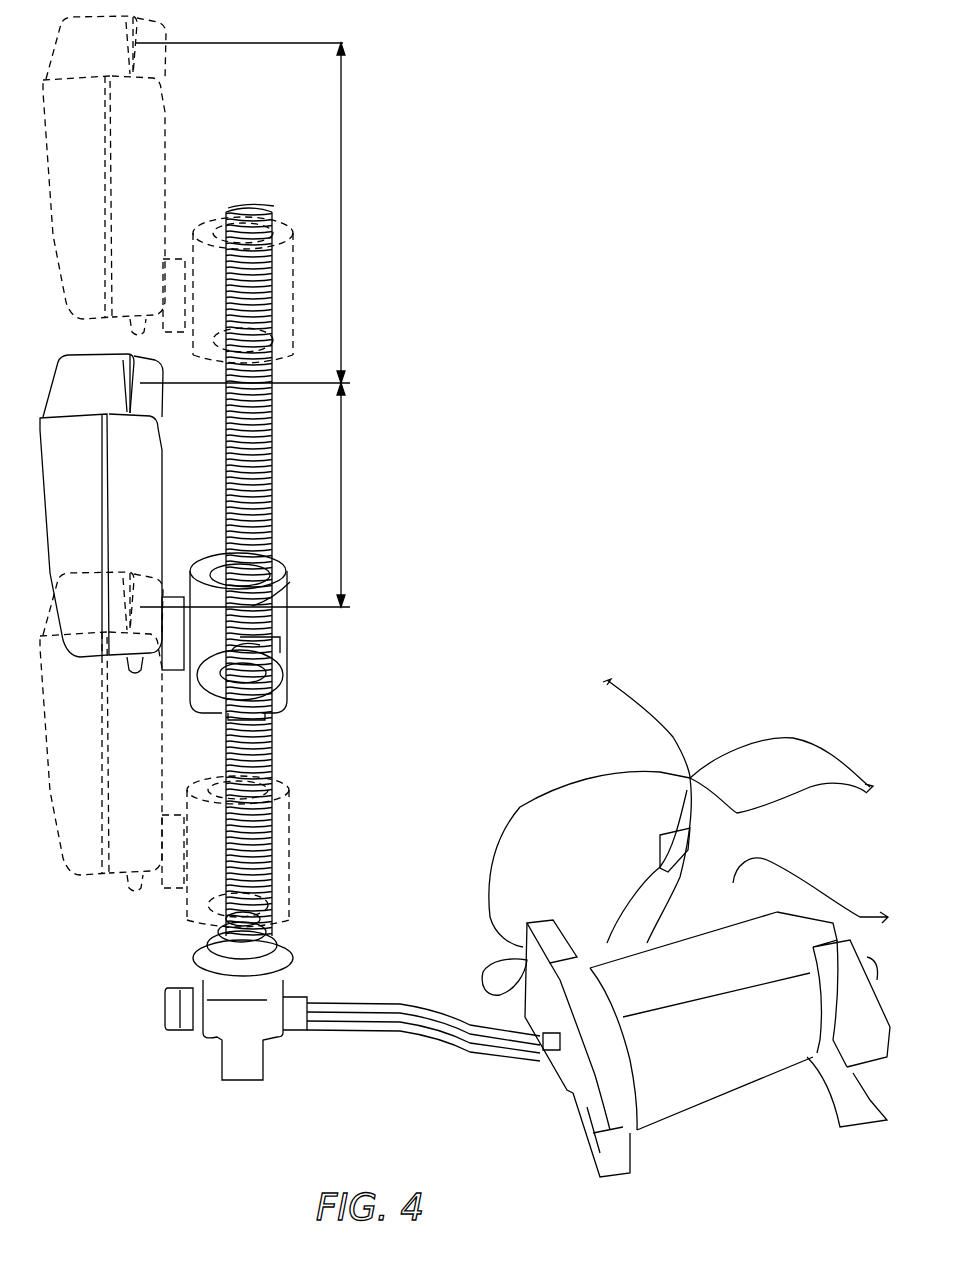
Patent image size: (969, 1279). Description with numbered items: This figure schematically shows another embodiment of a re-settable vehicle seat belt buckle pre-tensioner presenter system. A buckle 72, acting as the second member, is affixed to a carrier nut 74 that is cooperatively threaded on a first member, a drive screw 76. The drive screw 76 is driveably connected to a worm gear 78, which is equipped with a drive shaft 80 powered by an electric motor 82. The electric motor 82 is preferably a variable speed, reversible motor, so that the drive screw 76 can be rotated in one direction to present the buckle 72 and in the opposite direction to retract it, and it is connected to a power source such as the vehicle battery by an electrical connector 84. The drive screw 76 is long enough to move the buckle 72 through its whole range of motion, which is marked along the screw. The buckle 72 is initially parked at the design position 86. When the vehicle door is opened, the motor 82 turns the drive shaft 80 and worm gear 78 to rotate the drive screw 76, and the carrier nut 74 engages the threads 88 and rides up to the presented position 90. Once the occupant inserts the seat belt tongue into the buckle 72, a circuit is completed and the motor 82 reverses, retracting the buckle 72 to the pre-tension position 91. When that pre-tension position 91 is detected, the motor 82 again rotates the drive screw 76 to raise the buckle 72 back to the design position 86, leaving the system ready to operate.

The buckle 72 is at (130, 478).
The carrier nut 74 is at (278, 570).
The drive screw 76 is at (258, 438).
The worm gear 78 is at (288, 968).
The drive shaft 80 is at (410, 1040).
The electric motor 82 is at (717, 1060).
The electrical connector 84 is at (565, 780).
The design position 86 is at (345, 380).
The threads 88 is at (234, 217).
The presented position 90 is at (343, 43).
The pre-tension position 91 is at (345, 605).